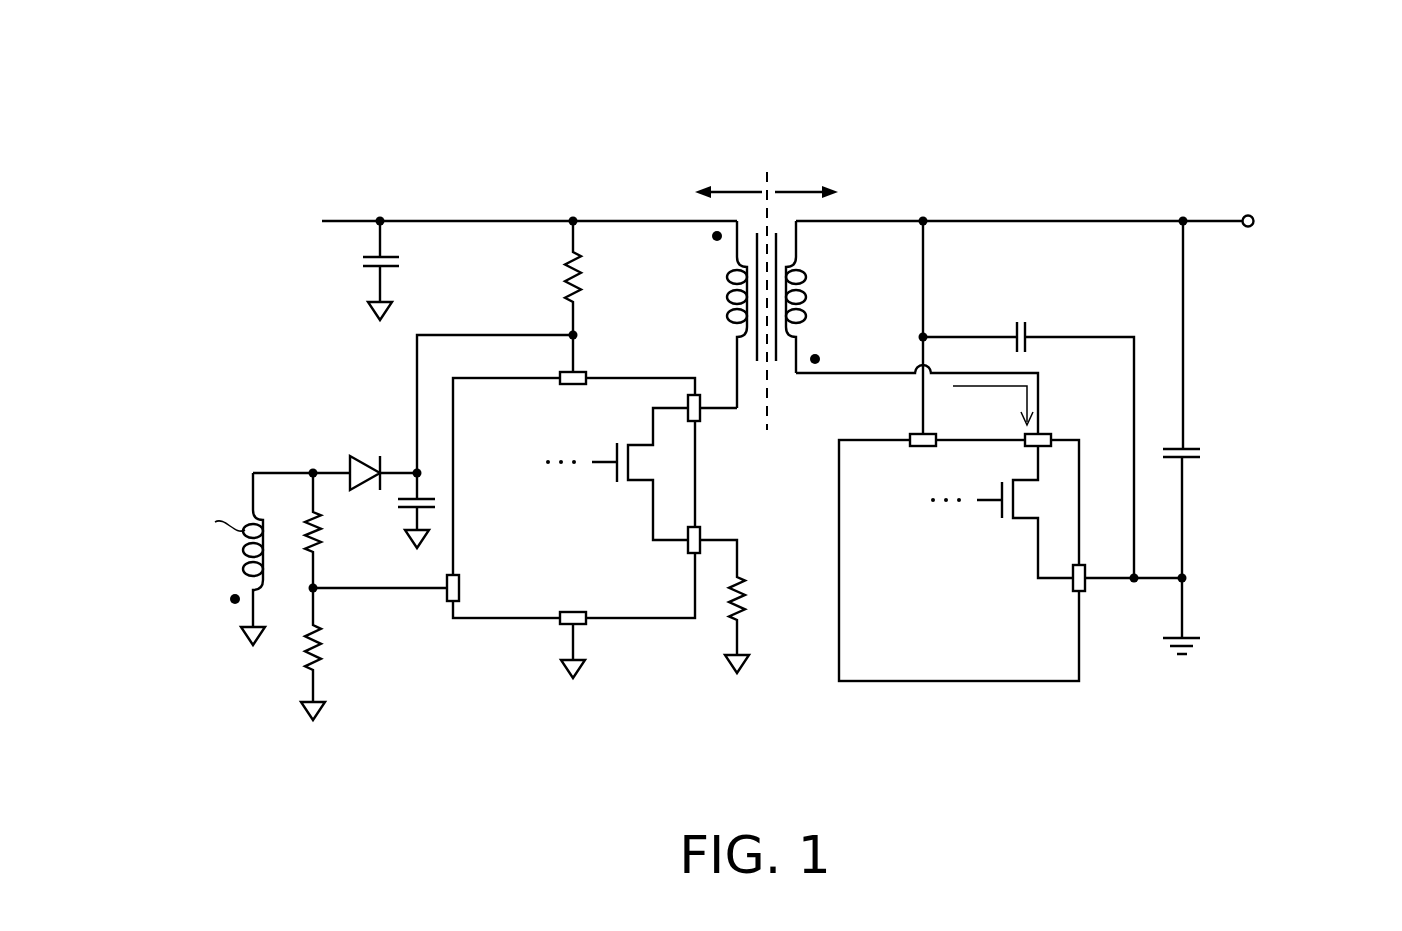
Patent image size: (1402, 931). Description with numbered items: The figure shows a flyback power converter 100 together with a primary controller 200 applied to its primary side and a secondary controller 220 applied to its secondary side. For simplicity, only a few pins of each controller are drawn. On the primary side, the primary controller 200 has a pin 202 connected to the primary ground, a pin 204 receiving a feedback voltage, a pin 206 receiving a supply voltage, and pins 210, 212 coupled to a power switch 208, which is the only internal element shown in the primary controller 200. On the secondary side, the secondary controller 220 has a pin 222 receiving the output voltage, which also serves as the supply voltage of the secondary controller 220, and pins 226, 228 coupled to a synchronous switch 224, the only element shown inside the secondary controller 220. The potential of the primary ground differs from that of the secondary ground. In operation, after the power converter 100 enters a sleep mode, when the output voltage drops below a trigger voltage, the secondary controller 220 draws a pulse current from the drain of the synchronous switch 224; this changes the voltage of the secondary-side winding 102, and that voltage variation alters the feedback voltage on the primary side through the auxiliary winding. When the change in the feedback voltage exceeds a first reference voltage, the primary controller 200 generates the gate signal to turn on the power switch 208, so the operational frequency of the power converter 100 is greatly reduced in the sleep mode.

The power converter 100 is at (1152, 93).
The secondary-side winding 102 is at (808, 297).
The primary controller 200 is at (673, 620).
The pin 202 is at (565, 627).
The pin 204 is at (447, 599).
The pin 206 is at (571, 386).
The power switch 208 is at (642, 485).
The pin 210 is at (701, 413).
The pin 212 is at (701, 533).
The secondary controller 220 is at (957, 683).
The pin 222 is at (919, 432).
The synchronous switch 224 is at (1025, 521).
The pin 226 is at (1043, 432).
The pin 228 is at (1086, 585).